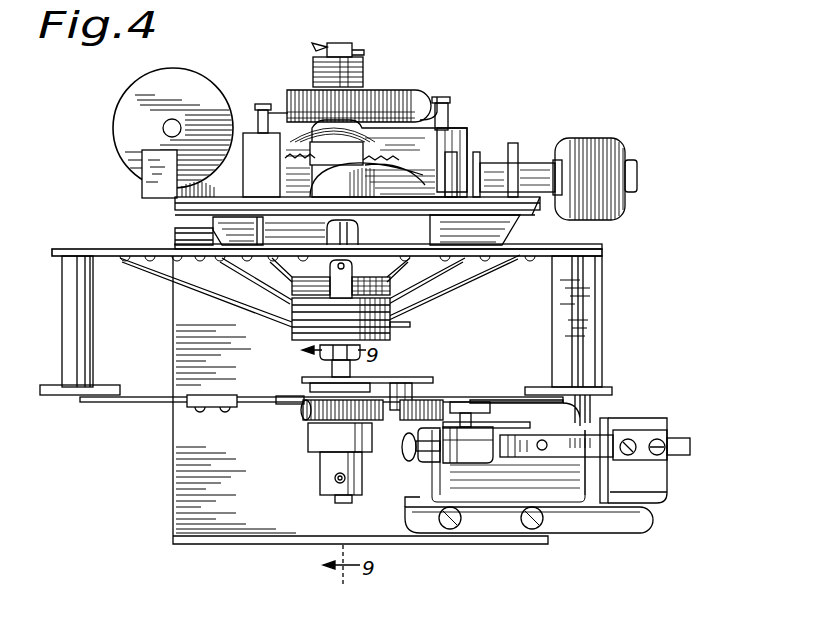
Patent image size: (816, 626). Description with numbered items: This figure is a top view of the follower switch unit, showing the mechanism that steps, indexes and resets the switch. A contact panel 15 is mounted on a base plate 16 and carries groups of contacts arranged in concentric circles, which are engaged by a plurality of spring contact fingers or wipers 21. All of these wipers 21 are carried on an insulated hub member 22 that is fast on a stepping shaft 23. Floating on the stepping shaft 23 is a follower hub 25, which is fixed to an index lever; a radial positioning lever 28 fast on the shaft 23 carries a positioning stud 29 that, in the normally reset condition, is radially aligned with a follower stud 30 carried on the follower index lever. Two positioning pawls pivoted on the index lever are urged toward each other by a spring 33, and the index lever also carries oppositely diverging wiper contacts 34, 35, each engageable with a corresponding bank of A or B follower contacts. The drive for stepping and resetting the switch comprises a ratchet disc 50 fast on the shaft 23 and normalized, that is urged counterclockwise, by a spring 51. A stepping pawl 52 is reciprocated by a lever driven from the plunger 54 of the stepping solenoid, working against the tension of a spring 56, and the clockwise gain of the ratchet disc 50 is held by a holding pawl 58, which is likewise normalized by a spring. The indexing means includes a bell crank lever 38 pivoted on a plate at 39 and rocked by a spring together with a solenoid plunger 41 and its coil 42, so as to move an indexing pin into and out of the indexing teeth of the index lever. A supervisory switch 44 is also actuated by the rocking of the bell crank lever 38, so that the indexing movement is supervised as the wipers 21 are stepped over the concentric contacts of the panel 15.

The contact panel 15 is at (110, 247).
The base plate 16 is at (381, 400).
The spring contact fingers or wipers 21 is at (238, 267).
The insulated hub member 22 is at (393, 338).
The stepping shaft 23 is at (334, 365).
The follower hub 25 is at (317, 441).
The radial positioning lever 28 is at (390, 379).
The positioning stud 29 is at (439, 394).
The follower stud 30 is at (355, 424).
The spring 33 is at (303, 417).
The wiper contact 34 is at (512, 400).
The wiper contact 35 is at (147, 405).
The bell crank lever 38 is at (390, 430).
The pivot 39 is at (405, 513).
The solenoid plunger 41 is at (413, 463).
The coil 42 is at (560, 470).
The supervisory switch 44 is at (567, 445).
The ratchet disc 50 is at (413, 155).
The spring 51 is at (367, 70).
The stepping pawl 52 is at (415, 98).
The plunger 54 is at (530, 167).
The spring 56 is at (377, 95).
The holding pawl 58 is at (293, 133).